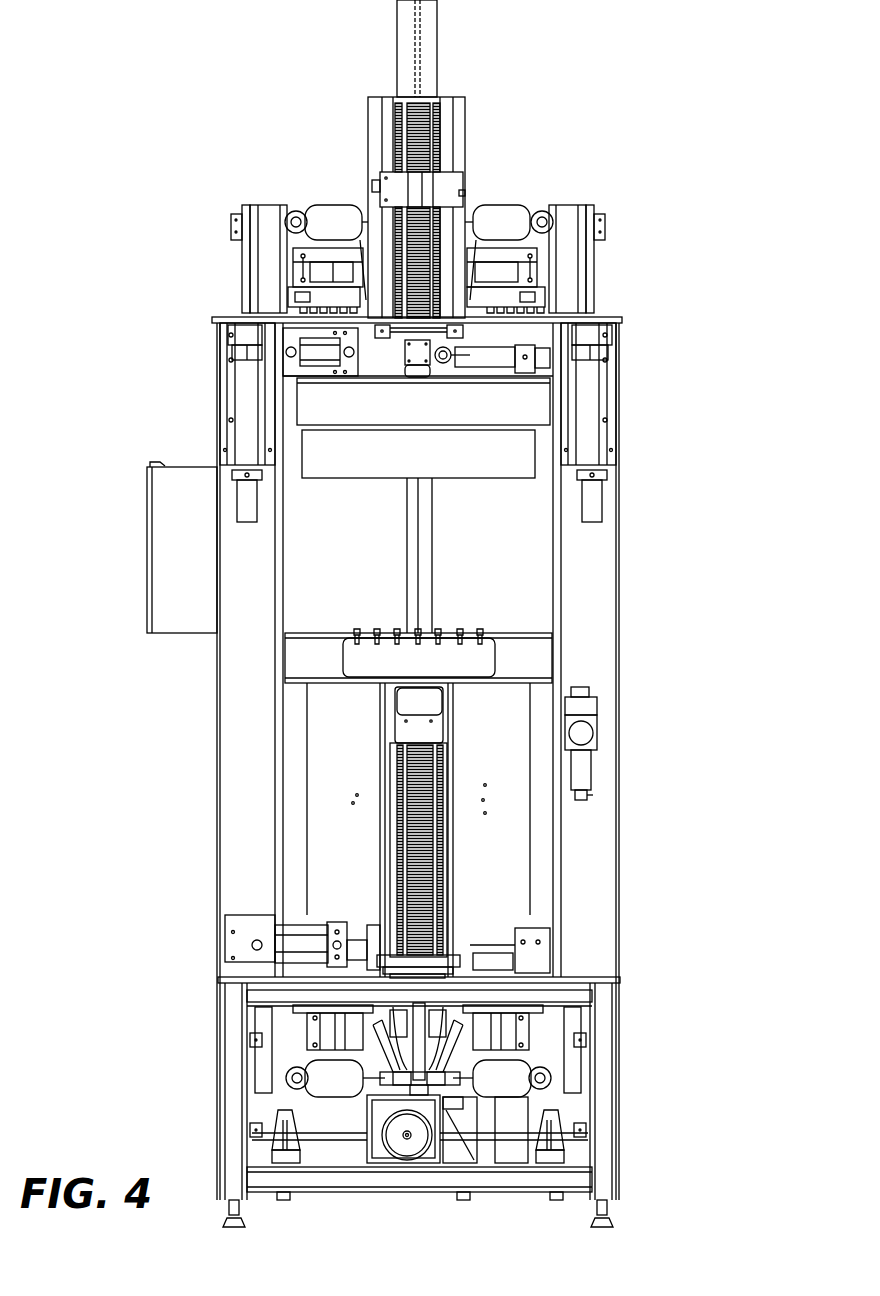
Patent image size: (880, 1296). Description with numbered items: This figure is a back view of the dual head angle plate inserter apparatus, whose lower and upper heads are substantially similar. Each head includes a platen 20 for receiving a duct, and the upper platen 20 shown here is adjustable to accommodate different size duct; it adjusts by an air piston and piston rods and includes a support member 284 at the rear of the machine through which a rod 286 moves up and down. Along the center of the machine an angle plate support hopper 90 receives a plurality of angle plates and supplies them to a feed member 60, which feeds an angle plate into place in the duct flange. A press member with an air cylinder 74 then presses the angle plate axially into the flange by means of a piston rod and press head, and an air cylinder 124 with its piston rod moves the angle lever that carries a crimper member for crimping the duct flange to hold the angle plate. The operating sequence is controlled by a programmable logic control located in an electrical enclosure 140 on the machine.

The platen 20 is at (615, 312).
The feed member 60 is at (448, 955).
The air cylinder 74 is at (313, 272).
The angle plate support hopper 90 is at (460, 125).
The air cylinder 124 is at (327, 215).
The electrical enclosure 140 is at (194, 556).
The support member 284 is at (243, 338).
The rod 286 is at (245, 352).